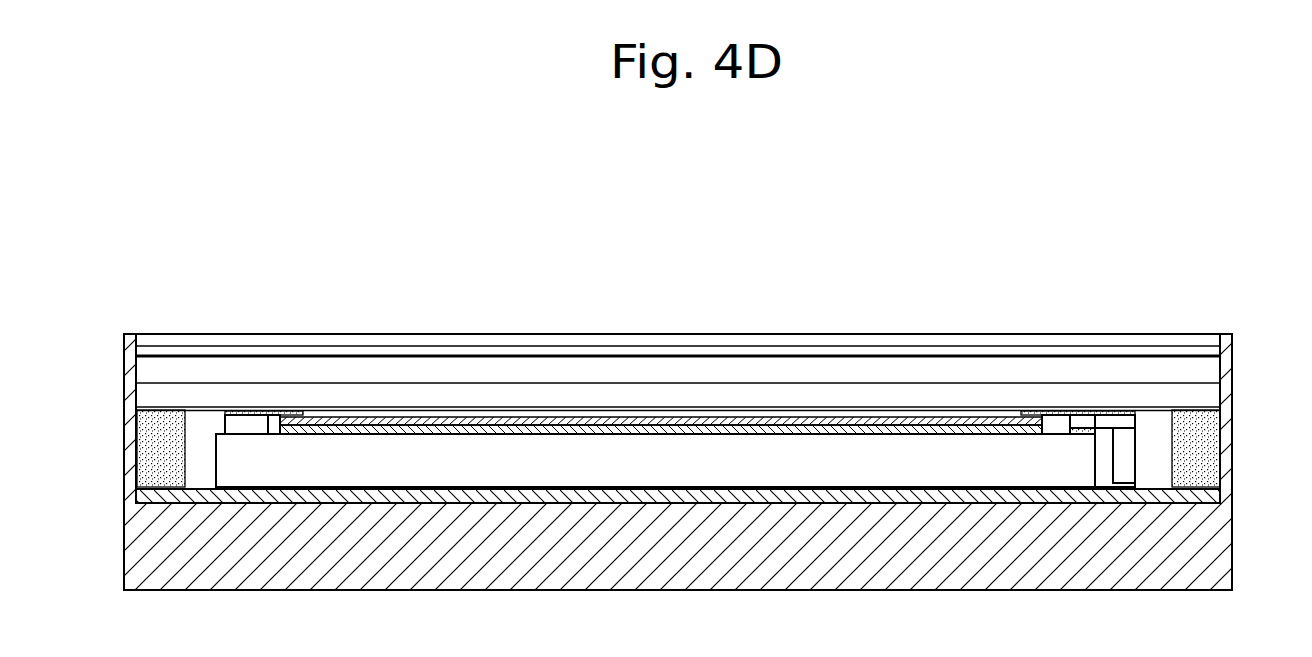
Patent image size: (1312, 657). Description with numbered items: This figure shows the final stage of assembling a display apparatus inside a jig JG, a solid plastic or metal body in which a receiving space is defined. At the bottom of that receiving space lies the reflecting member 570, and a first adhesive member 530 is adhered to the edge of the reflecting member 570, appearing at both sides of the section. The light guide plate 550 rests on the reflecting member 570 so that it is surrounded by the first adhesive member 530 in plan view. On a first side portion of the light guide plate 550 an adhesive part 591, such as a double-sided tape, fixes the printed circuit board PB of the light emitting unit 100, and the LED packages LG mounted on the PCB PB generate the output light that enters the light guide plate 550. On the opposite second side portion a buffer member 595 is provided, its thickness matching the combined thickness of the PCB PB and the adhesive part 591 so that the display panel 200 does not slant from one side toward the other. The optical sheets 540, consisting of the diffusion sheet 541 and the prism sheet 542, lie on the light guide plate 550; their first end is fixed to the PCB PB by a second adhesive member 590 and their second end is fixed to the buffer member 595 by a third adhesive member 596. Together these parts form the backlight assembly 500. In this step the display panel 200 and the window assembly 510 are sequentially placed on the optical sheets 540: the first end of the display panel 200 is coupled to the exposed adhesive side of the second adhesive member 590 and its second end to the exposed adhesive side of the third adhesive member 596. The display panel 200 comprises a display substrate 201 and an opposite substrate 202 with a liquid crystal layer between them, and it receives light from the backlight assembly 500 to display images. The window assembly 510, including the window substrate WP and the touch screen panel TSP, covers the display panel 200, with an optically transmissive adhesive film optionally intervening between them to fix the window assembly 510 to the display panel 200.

The jig JG is at (1218, 543).
The first adhesive member 530 is at (148, 450).
The window assembly 510 is at (678, 290).
The window panel WP is at (585, 340).
The touch screen panel TSP is at (655, 348).
The backlight assembly 500 is at (1130, 224).
The optical sheets 540 is at (678, 318).
The diffusion sheet 541 is at (850, 365).
The prism sheet 542 is at (913, 390).
The light guide plate 550 is at (722, 445).
The reflecting member 570 is at (778, 493).
The second adhesive member 590 is at (1042, 433).
The adhesive part 591 is at (1077, 430).
The light emitting unit 100 is at (1112, 356).
The printed circuit board PB is at (1092, 423).
The LED packages LG is at (1128, 438).
The display panel 200 is at (661, 329).
The display substrate 201 is at (400, 420).
The opposite substrate 202 is at (468, 428).
The buffer member 595 is at (240, 420).
The third adhesive member 596 is at (273, 425).